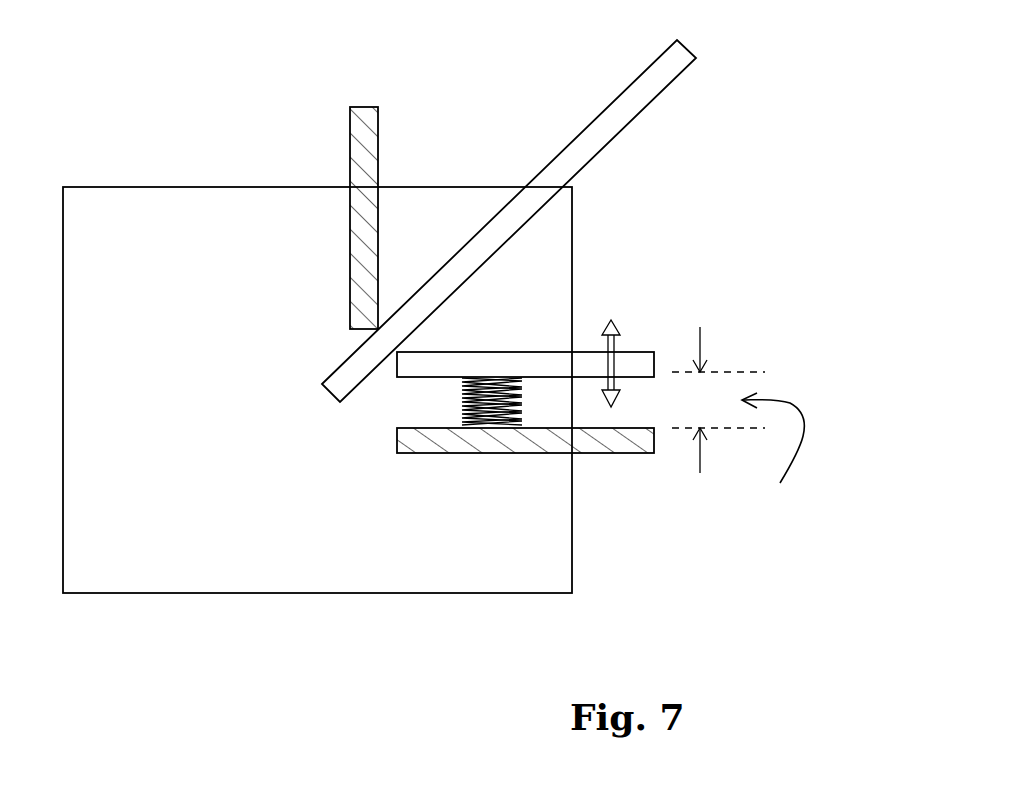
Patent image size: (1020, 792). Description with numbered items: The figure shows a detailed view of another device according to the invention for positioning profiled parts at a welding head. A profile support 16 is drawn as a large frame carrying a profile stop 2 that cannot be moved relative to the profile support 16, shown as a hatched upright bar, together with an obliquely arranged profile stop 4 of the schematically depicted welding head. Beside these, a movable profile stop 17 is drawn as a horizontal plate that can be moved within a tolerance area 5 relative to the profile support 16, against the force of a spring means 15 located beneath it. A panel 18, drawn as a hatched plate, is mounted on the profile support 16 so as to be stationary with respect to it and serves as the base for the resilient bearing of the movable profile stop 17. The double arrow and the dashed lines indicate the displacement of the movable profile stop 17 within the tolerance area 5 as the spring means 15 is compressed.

The profile stop 2 is at (358, 137).
The profile stop 4 is at (602, 130).
The tolerance area 5 is at (773, 461).
The spring means 15 is at (452, 392).
The profile support 16 is at (149, 222).
The movable profile stop 17 is at (558, 363).
The panel 18 is at (518, 443).